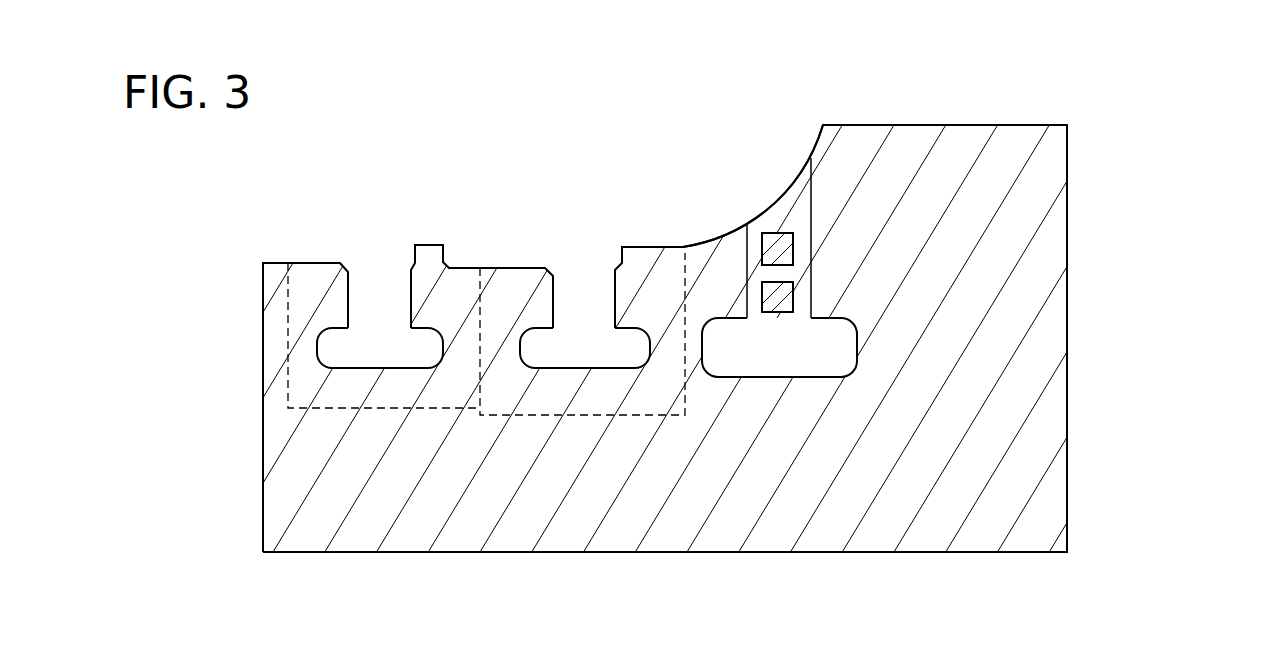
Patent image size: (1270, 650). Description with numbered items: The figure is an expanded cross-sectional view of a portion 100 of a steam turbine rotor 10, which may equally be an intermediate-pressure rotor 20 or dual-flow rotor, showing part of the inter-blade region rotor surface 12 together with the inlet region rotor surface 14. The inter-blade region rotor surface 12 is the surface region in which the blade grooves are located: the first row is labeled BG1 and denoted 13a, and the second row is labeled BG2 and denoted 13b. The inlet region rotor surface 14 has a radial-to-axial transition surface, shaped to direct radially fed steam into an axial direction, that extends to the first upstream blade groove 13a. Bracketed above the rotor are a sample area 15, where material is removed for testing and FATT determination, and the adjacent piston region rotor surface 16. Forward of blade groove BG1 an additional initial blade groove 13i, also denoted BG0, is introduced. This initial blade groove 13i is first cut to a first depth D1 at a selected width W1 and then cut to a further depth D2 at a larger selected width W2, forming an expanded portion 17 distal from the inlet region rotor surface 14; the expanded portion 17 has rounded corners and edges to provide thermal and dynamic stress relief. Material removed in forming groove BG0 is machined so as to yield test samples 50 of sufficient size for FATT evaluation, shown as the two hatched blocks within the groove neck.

The portion of the steam turbine rotor 100 is at (1012, 46).
The high-pressure steam turbine rotor 10 is at (340, 141).
The intermediate-pressure rotor 20 is at (1067, 172).
The inter-blade region rotor surface 12 is at (683, 223).
The first row of blade grooves 13a is at (582, 369).
The second row of blade grooves 13b is at (384, 374).
The initial blade groove 13i is at (847, 299).
The inlet region rotor surface 14 is at (722, 236).
The sample area 15 is at (683, 106).
The piston region rotor surface 16 is at (1063, 106).
The expanded portion 17 is at (787, 377).
The test samples 50 is at (794, 284).
The initial blade groove BG0 is at (828, 206).
The first row of blade grooves BG1 is at (682, 429).
The second row of blade grooves BG2 is at (288, 429).
The selected width W1 is at (810, 190).
The larger selected width W2 is at (708, 394).
The first depth D1 is at (741, 237).
The further depth D2 is at (884, 313).